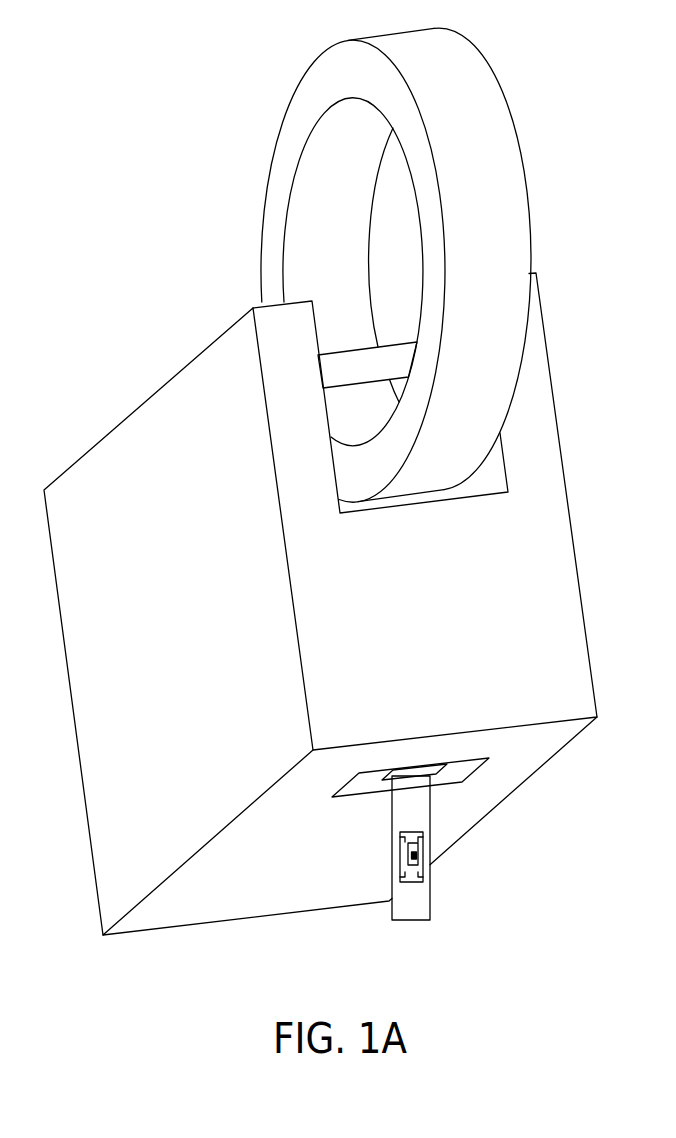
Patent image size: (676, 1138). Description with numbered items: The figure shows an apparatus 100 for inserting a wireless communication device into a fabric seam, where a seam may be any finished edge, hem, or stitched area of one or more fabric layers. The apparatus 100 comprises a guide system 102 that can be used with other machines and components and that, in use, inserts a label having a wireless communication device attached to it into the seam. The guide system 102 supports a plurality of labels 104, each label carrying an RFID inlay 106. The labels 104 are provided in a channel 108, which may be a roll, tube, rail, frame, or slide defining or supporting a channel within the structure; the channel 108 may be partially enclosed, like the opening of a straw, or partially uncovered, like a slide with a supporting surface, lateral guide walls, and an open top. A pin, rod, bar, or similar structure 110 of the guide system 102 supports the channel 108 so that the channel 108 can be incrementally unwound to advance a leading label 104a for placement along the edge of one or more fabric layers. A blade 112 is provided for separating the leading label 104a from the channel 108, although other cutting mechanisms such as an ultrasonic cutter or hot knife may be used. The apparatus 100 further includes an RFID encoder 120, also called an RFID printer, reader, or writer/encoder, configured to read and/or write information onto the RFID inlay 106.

The apparatus 100 is at (99, 116).
The guide system 102 is at (149, 398).
The labels 104 is at (527, 107).
The leading label 104a is at (430, 878).
The RFID inlay 106 is at (397, 857).
The channel 108 is at (515, 173).
The pin, rod, bar, or other similar structure 110 is at (363, 352).
The blade 112 is at (418, 777).
The RFID encoder 120 is at (98, 720).